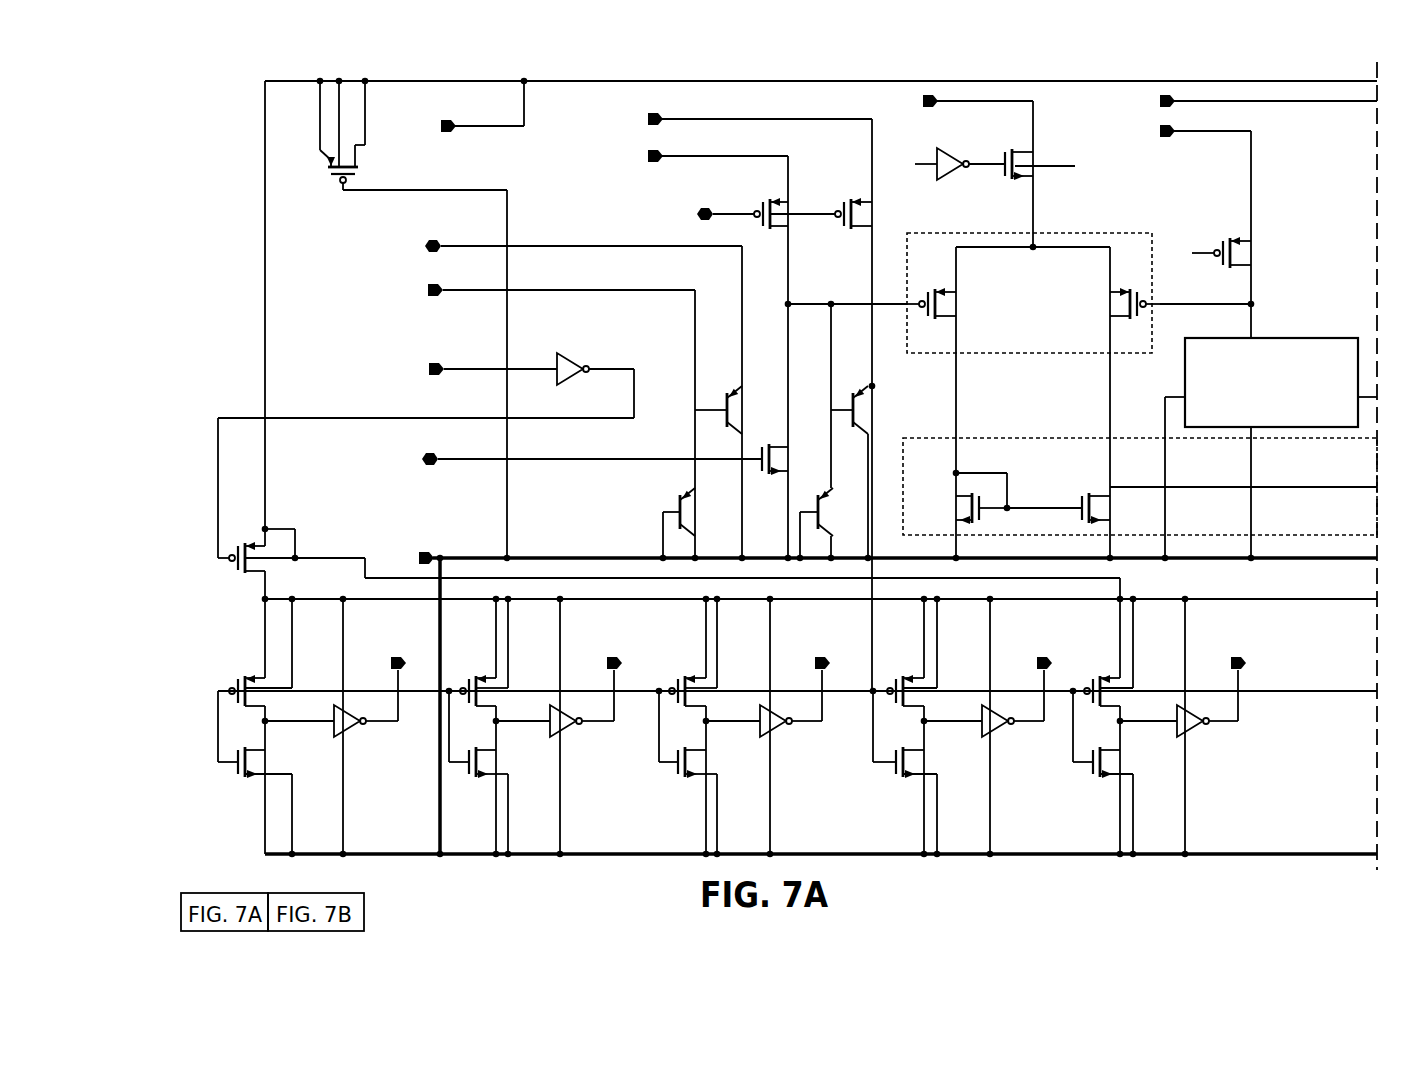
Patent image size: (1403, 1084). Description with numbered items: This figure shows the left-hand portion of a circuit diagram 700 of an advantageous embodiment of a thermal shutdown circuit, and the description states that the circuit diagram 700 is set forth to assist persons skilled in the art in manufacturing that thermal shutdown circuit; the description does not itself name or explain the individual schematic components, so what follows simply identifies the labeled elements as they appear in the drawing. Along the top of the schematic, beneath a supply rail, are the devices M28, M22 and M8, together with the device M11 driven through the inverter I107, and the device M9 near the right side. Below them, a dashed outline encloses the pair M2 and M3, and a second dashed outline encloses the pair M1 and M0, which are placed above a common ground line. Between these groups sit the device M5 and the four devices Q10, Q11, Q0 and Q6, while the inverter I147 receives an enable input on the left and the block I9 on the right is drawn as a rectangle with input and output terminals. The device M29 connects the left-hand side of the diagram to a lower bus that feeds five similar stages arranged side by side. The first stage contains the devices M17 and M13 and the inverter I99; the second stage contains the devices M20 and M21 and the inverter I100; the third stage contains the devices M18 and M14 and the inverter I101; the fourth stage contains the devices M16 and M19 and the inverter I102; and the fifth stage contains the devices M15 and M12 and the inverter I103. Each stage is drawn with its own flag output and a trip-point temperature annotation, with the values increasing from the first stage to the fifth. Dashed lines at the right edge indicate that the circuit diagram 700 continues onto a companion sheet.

The circuit diagram 700 is at (231, 150).
The PMOS transistor M28 is at (320, 135).
The PMOS transistor M29 is at (256, 569).
The PMOS transistor M22 is at (765, 197).
The PMOS transistor M8 is at (873, 211).
The NMOS transistor M11 is at (1030, 150).
The PMOS transistor M9 is at (1229, 235).
The PMOS transistor M2 is at (950, 303).
The PMOS transistor M3 is at (1119, 303).
The NMOS transistor M1 is at (964, 508).
The NMOS transistor M0 is at (1114, 508).
The NMOS transistor M5 is at (770, 473).
The bipolar transistor Q10 is at (742, 410).
The bipolar transistor Q11 is at (702, 523).
The bipolar transistor Q0 is at (833, 523).
The bipolar transistor Q6 is at (868, 410).
The inverter I147 is at (595, 357).
The inverter I107 is at (966, 175).
The A_tsd_res2 block I9 is at (1271, 367).
The PMOS transistor M17 is at (254, 676).
The NMOS transistor M13 is at (267, 760).
The inverter I99 is at (335, 702).
The PMOS transistor M20 is at (478, 676).
The NMOS transistor M21 is at (498, 760).
The inverter I100 is at (559, 702).
The PMOS transistor M18 is at (687, 676).
The NMOS transistor M14 is at (708, 760).
The inverter I101 is at (768, 702).
The PMOS transistor M16 is at (905, 676).
The NMOS transistor M19 is at (905, 781).
The inverter I102 is at (988, 702).
The PMOS transistor M15 is at (1102, 676).
The NMOS transistor M12 is at (1122, 760).
The inverter I103 is at (1183, 702).